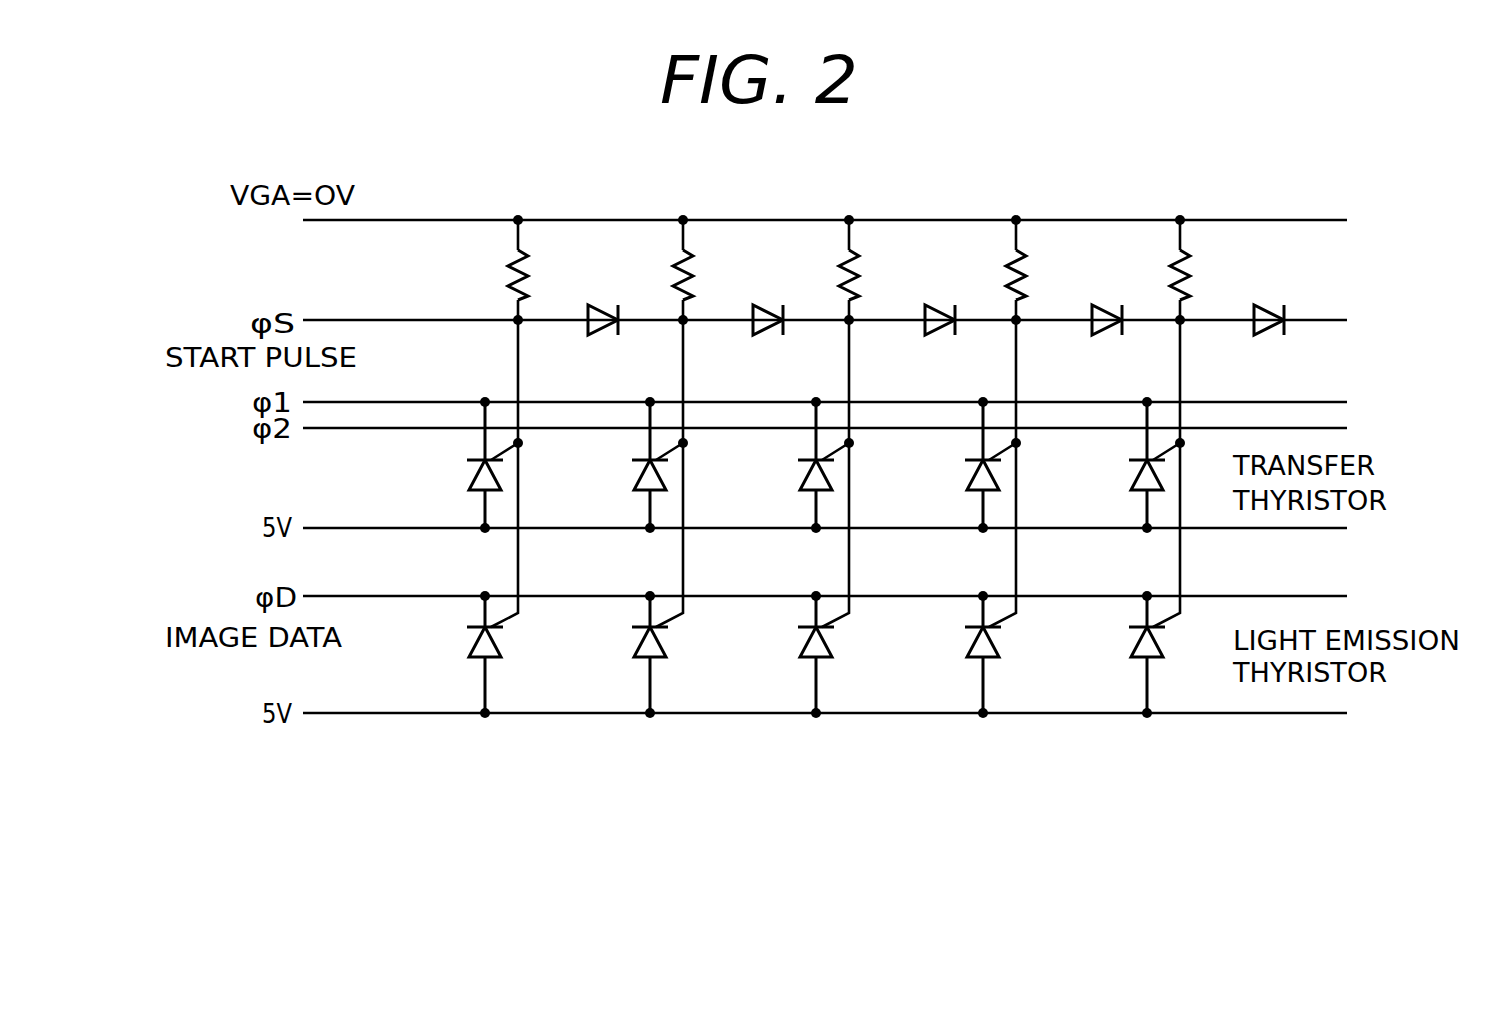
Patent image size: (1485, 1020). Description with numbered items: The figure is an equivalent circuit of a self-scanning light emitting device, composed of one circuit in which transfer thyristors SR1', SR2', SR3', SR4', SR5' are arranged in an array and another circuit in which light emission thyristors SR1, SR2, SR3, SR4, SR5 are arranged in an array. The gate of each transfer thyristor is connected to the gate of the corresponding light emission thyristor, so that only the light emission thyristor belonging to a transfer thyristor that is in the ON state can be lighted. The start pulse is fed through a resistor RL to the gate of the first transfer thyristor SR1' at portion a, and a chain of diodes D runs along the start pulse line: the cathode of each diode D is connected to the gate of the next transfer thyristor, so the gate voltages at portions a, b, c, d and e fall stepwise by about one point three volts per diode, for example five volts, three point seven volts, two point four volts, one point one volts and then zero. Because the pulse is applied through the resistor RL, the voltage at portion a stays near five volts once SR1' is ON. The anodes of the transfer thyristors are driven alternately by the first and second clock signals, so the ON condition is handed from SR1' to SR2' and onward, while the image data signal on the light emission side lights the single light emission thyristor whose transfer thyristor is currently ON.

The resistor RL is at (1177, 254).
The diode D is at (592, 306).
The portion a is at (514, 317).
The portion b is at (679, 317).
The portion c is at (845, 317).
The portion d is at (1012, 317).
The portion e is at (1176, 317).
The transfer thyristor SR1' is at (436, 465).
The transfer thyristor SR2' is at (602, 465).
The transfer thyristor SR3' is at (768, 465).
The transfer thyristor SR4' is at (935, 465).
The transfer thyristor SR5' is at (1101, 465).
The light emission thyristor SR1 is at (443, 654).
The light emission thyristor SR2 is at (606, 654).
The light emission thyristor SR3 is at (771, 654).
The light emission thyristor SR4 is at (938, 654).
The light emission thyristor SR5 is at (1104, 654).